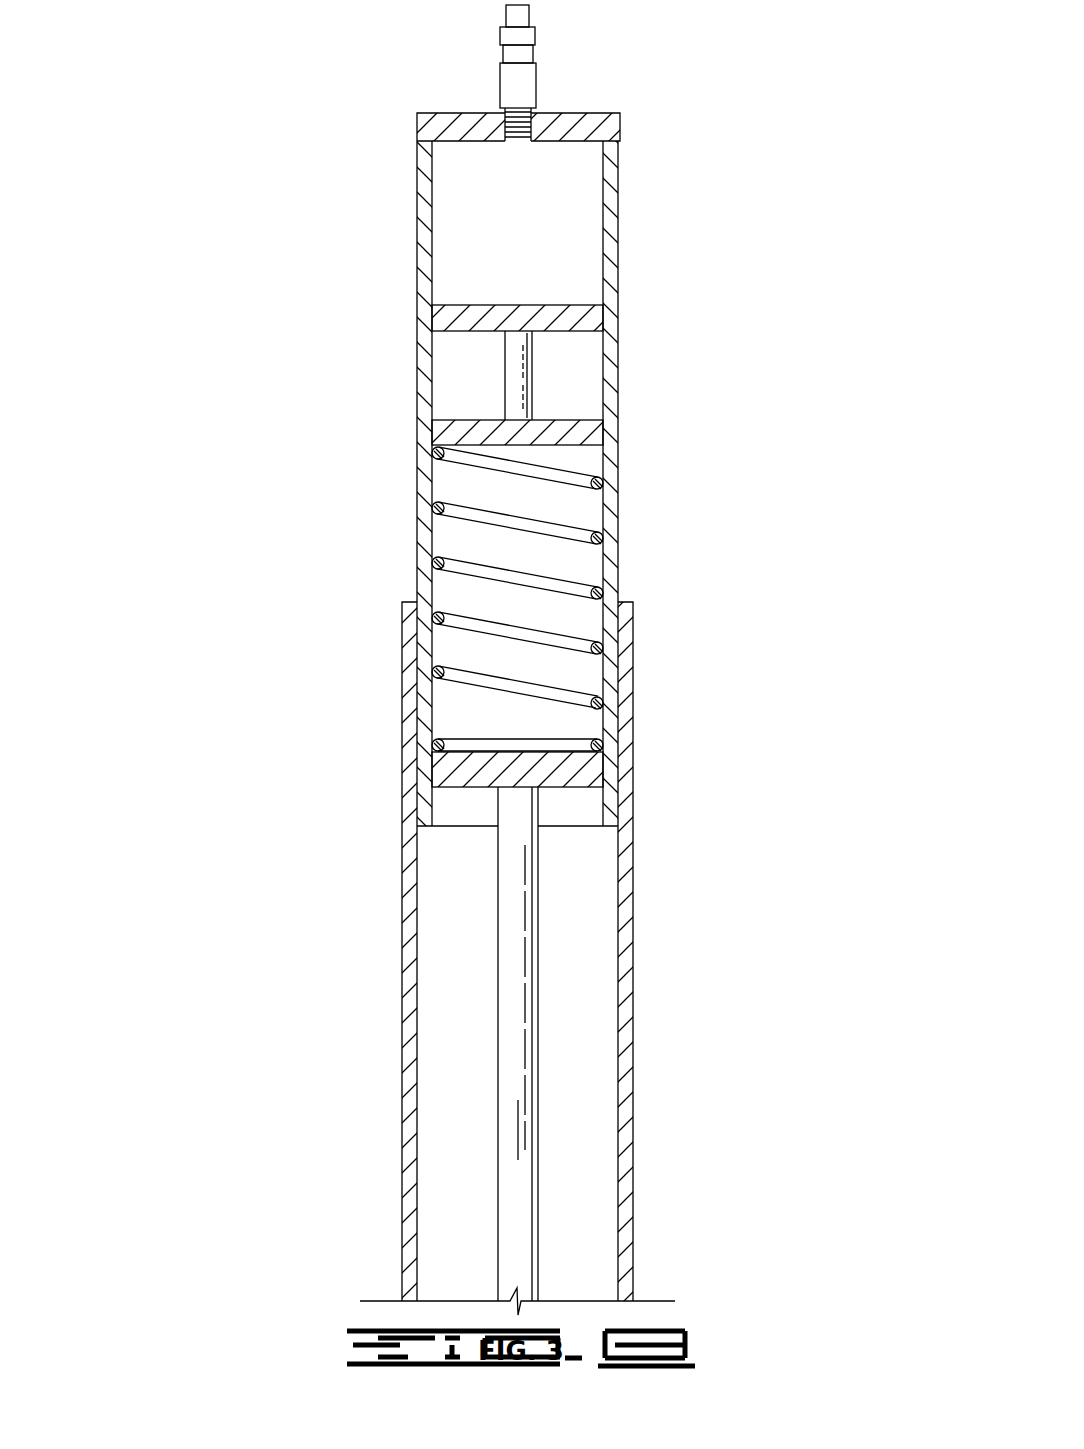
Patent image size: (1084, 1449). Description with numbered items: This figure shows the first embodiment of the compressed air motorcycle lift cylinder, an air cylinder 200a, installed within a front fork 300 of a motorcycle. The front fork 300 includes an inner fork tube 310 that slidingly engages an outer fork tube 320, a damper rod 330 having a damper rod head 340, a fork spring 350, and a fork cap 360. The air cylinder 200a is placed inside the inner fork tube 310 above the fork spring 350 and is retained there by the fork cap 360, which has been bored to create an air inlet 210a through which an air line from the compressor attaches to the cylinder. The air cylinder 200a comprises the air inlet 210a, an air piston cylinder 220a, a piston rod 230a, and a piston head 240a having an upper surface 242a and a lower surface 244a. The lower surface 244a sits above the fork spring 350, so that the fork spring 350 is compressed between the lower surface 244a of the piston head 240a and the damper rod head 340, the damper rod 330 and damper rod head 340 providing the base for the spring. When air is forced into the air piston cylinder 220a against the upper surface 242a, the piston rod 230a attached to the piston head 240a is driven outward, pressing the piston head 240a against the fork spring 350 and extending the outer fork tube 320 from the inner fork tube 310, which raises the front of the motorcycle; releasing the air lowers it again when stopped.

The air cylinder 200a is at (400, 148).
The air inlet 210a is at (500, 86).
The air piston cylinder 220a is at (458, 218).
The piston rod 230a is at (532, 381).
The piston head 240a is at (452, 305).
The upper surface 242a is at (578, 305).
The lower surface 244a is at (583, 447).
The front fork 300 is at (388, 648).
The inner fork tube 310 is at (620, 222).
The outer fork tube 320 is at (635, 837).
The damper rod 330 is at (498, 1040).
The damper rod head 340 is at (470, 788).
The fork spring 350 is at (570, 593).
The fork cap 360 is at (620, 118).